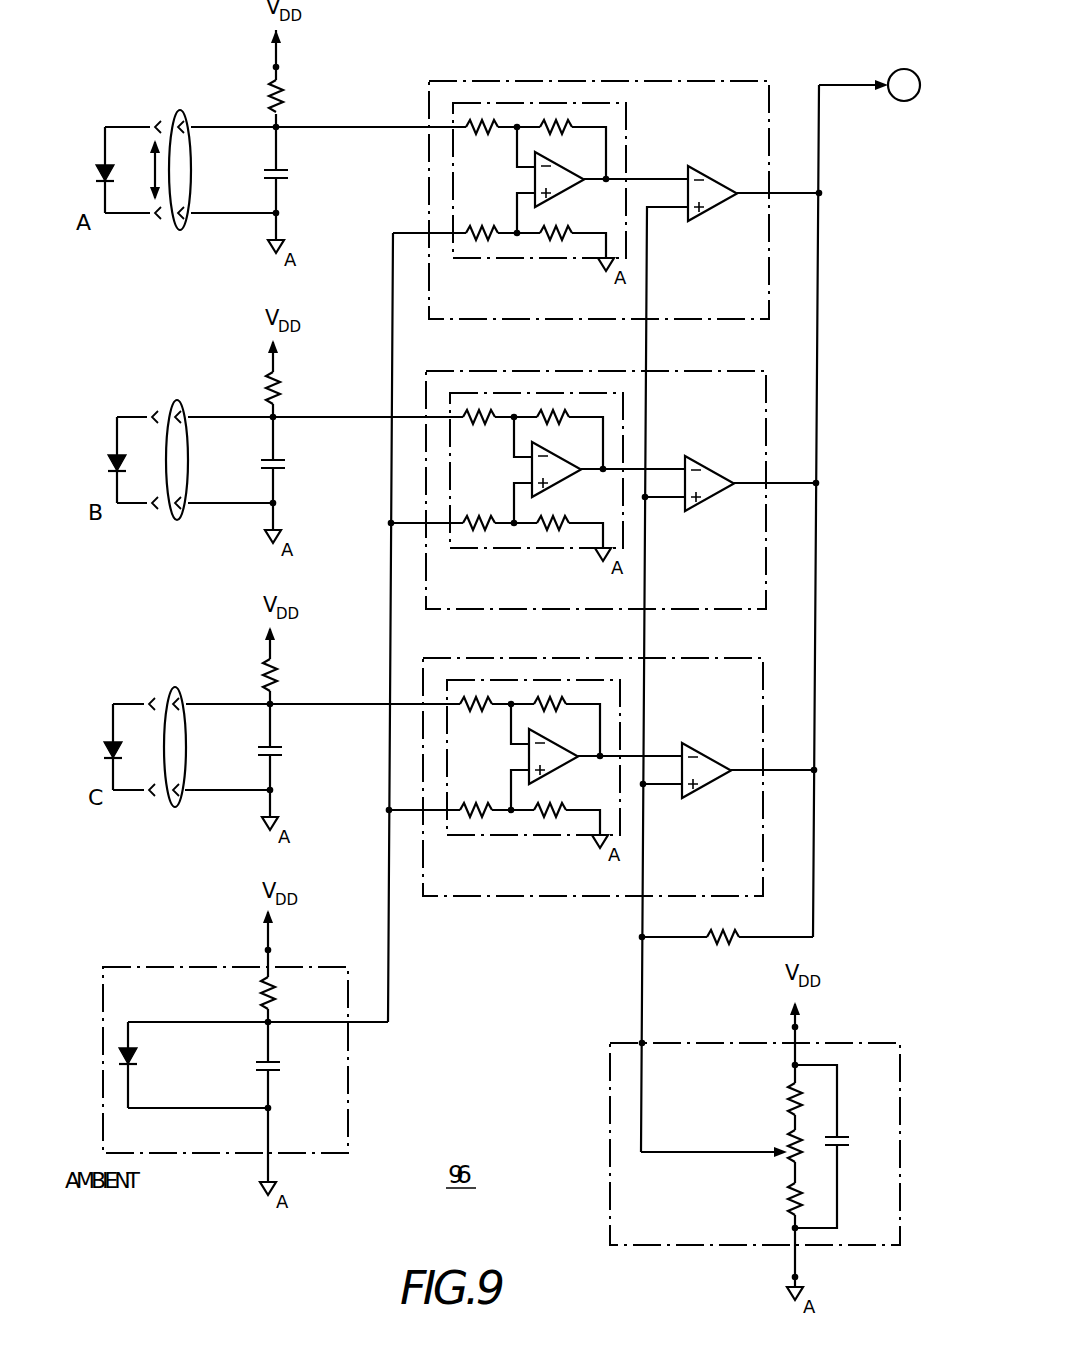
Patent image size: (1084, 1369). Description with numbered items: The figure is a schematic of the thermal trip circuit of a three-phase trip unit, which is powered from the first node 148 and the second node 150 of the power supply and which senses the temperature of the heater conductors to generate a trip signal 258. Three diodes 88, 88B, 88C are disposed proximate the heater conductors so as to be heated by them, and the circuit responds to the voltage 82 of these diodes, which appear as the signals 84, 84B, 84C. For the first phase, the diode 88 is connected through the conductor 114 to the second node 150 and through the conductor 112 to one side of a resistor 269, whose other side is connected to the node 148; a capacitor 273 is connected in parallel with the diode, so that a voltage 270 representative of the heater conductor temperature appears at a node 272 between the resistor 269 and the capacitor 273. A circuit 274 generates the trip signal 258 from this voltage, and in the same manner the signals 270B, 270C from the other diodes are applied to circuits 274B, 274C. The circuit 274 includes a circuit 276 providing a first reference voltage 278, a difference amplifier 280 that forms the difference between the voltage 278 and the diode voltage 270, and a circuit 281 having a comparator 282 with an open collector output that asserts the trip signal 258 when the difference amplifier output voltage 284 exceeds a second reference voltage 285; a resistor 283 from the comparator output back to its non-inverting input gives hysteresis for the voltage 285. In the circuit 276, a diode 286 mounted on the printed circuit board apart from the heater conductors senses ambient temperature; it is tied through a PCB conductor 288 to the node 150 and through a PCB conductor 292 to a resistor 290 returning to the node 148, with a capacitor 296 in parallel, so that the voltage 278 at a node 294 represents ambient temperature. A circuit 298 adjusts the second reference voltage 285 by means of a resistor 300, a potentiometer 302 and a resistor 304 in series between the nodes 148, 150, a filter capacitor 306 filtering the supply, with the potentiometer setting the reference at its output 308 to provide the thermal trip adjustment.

The voltage 82 is at (151, 171).
The signal 84 is at (180, 111).
The signal 84B is at (173, 441).
The signal 84C is at (170, 728).
The diode 88 is at (97, 180).
The diode 88B is at (98, 460).
The diode 88C is at (96, 747).
The conductor 112 is at (203, 130).
The conductor 114 is at (204, 212).
The first node 148 is at (272, 67).
The second node 150 is at (273, 225).
The trip signal 258 is at (845, 87).
The resistor 269 is at (284, 100).
The voltage 270 is at (314, 130).
The signal 270B is at (325, 436).
The signal 270C is at (323, 724).
The node 272 is at (274, 125).
The capacitor 273 is at (292, 178).
The circuit 274 is at (743, 82).
The circuit 274B is at (616, 473).
The circuit 274C is at (613, 760).
The circuit 276 is at (132, 965).
The first reference voltage 278 is at (288, 1020).
The difference amplifier 280 is at (627, 117).
The circuit 281 is at (722, 175).
The comparator 282 is at (705, 214).
The resistor 283 is at (722, 944).
The difference amplifier output voltage 284 is at (642, 178).
The second reference voltage 285 is at (558, 194).
The diode 286 is at (137, 1057).
The PCB conductor 288 is at (188, 1110).
The resistor 290 is at (261, 993).
The PCB conductor 292 is at (183, 1018).
The node 294 is at (265, 1025).
The capacitor 296 is at (283, 1065).
The circuit 298 is at (882, 1043).
The resistor 300 is at (788, 1105).
The potentiometer 302 is at (788, 1142).
The resistor 304 is at (788, 1201).
The filter capacitor 306 is at (850, 1140).
The output 308 is at (637, 1042).